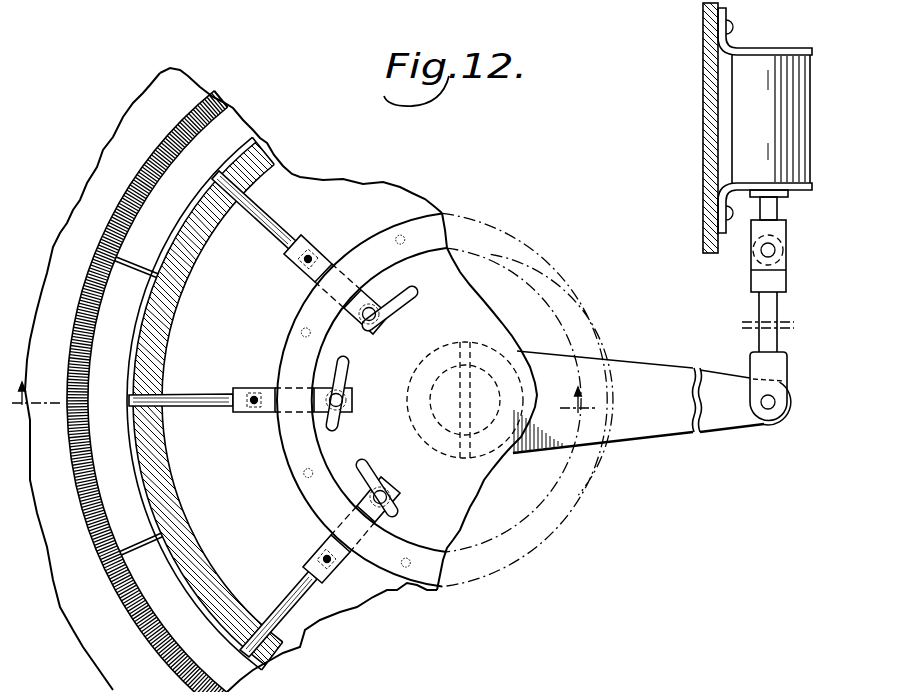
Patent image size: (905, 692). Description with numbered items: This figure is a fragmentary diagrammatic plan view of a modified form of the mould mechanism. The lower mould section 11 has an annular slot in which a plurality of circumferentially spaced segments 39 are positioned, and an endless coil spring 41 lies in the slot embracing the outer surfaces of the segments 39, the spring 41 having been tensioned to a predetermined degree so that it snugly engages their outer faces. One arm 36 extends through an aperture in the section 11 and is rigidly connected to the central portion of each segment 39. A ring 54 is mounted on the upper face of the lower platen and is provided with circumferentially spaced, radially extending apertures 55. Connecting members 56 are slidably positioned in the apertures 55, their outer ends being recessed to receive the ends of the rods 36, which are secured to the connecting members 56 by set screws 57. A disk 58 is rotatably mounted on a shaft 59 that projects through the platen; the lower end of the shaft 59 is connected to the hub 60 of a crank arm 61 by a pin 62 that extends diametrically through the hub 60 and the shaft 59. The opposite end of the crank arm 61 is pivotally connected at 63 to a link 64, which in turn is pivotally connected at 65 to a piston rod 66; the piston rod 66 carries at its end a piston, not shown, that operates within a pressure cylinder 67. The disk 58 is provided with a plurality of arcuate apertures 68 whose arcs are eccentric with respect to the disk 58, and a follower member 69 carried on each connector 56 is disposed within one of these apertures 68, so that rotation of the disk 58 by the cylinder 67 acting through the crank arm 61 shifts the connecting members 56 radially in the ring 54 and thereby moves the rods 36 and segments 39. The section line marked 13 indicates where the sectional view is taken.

The lower mould section 11 is at (163, 483).
The section line indicator 13 is at (305, 410).
The arm 36 is at (280, 230).
The segment 39 is at (105, 372).
The endless coil spring 41 is at (215, 100).
The ring 54 is at (422, 582).
The aperture 55 is at (365, 238).
The connecting member 56 is at (270, 412).
The set screw 57 is at (254, 400).
The disk 58 is at (463, 495).
The shaft 59 is at (497, 463).
The hub 60 is at (493, 340).
The crank arm 61 is at (670, 430).
The pin 62 is at (483, 337).
The pivotal connection 63 is at (768, 412).
The link 64 is at (768, 306).
The pivotal connection 65 is at (765, 252).
The piston rod 66 is at (773, 208).
The pressure cylinder 67 is at (730, 103).
The arcuate aperture 68 is at (350, 377).
The follower member 69 is at (387, 497).